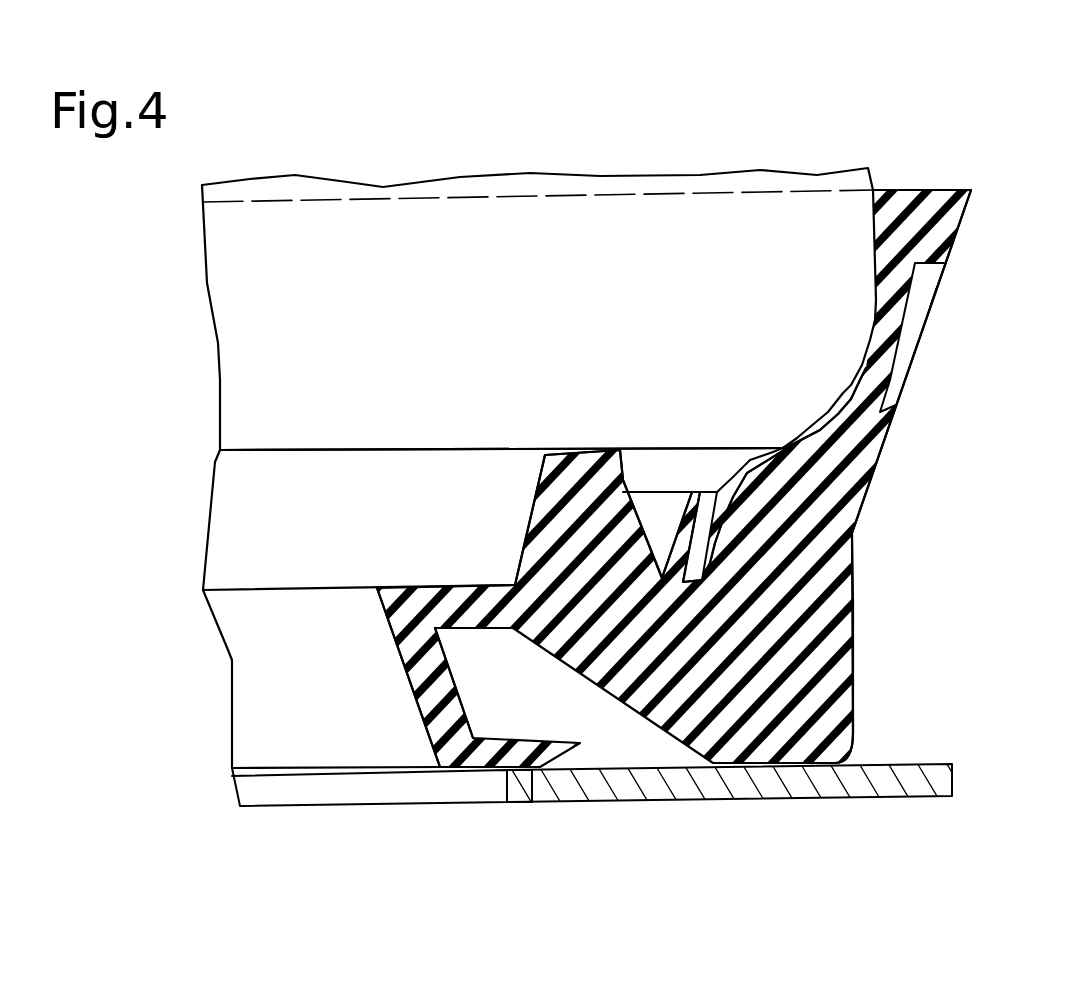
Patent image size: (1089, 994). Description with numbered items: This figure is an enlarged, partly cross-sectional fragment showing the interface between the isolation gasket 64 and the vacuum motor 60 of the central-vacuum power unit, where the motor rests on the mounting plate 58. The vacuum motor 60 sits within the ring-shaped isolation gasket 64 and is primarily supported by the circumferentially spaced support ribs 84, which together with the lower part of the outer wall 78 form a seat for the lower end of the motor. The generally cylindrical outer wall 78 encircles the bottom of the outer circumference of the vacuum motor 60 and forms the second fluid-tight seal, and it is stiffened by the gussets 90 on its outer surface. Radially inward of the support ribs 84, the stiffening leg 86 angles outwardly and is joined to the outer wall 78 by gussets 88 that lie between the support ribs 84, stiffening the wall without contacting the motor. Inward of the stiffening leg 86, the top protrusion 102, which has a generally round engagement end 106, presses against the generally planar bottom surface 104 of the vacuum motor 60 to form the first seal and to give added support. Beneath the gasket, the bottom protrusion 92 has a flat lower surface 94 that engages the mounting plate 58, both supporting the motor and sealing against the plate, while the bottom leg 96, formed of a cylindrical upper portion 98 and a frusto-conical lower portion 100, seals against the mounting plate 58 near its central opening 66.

The mounting plate 58 is at (883, 797).
The vacuum motor 60 is at (712, 177).
The isolation gasket 64 is at (857, 648).
The central opening 66 is at (505, 784).
The outer wall 78 is at (920, 188).
The support ribs 84 is at (775, 450).
The stiffening leg 86 is at (697, 535).
The gussets 88 is at (728, 486).
The gussets 90 is at (942, 303).
The bottom protrusion 92 is at (853, 687).
The lower surface 94 is at (782, 765).
The bottom leg 96 is at (413, 727).
The upper portion 98 is at (407, 683).
The lower portion 100 is at (533, 772).
The top protrusion 102 is at (526, 525).
The bottom surface 104 is at (457, 452).
The engagement end 106 is at (570, 450).